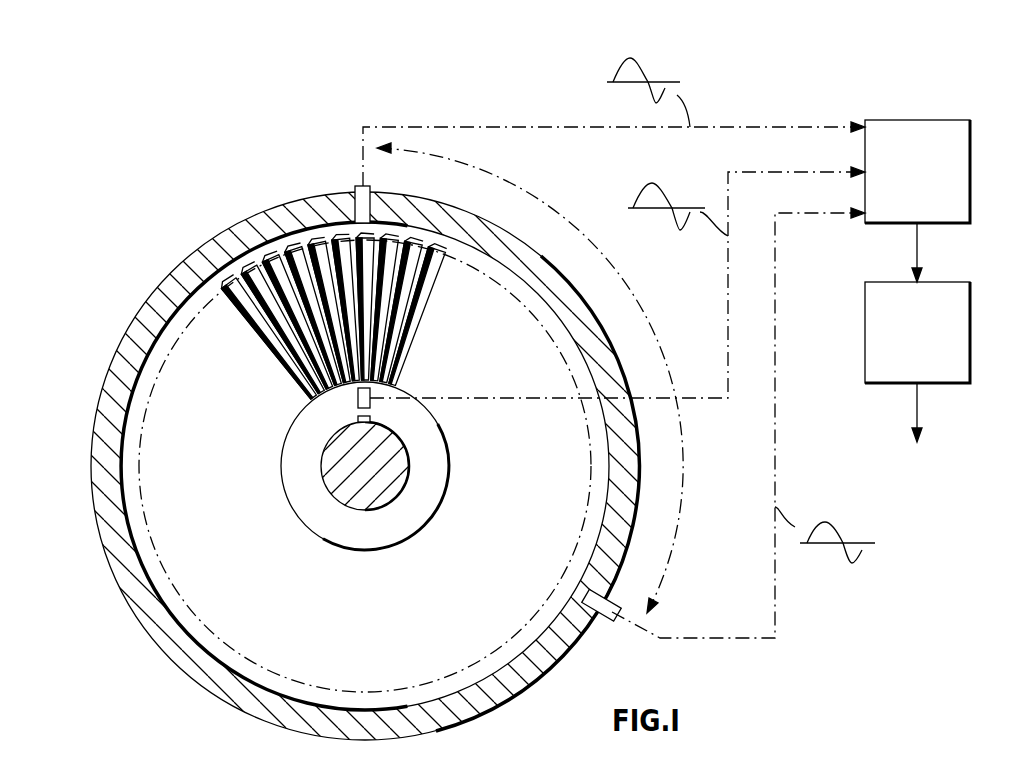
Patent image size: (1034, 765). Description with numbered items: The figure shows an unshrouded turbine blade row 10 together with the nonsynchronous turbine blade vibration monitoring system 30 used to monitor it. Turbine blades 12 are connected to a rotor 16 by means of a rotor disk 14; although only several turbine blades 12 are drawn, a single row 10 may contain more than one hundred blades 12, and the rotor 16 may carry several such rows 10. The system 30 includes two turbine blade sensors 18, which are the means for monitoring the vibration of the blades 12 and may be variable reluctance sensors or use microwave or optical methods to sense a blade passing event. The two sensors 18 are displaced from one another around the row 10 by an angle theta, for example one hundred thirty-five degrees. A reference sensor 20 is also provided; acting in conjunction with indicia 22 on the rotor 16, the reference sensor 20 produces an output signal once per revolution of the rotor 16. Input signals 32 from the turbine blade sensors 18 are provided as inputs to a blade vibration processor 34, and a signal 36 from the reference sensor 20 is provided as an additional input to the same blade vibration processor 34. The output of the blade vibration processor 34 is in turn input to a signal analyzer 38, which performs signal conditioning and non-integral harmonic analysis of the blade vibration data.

The unshrouded turbine blade row 10 is at (169, 255).
The turbine blades 12 is at (303, 325).
The rotor disk 14 is at (336, 547).
The rotor 16 is at (340, 478).
The turbine blade sensors 18 is at (363, 204).
The reference sensor 20 is at (358, 401).
The indicia 22 is at (370, 418).
The nonsynchronous turbine blade vibration monitoring system 30 is at (1011, 265).
The input signals 32 is at (610, 72).
The blade vibration processor 34 is at (933, 120).
The signal 36 is at (632, 194).
The signal analyzer 38 is at (950, 385).